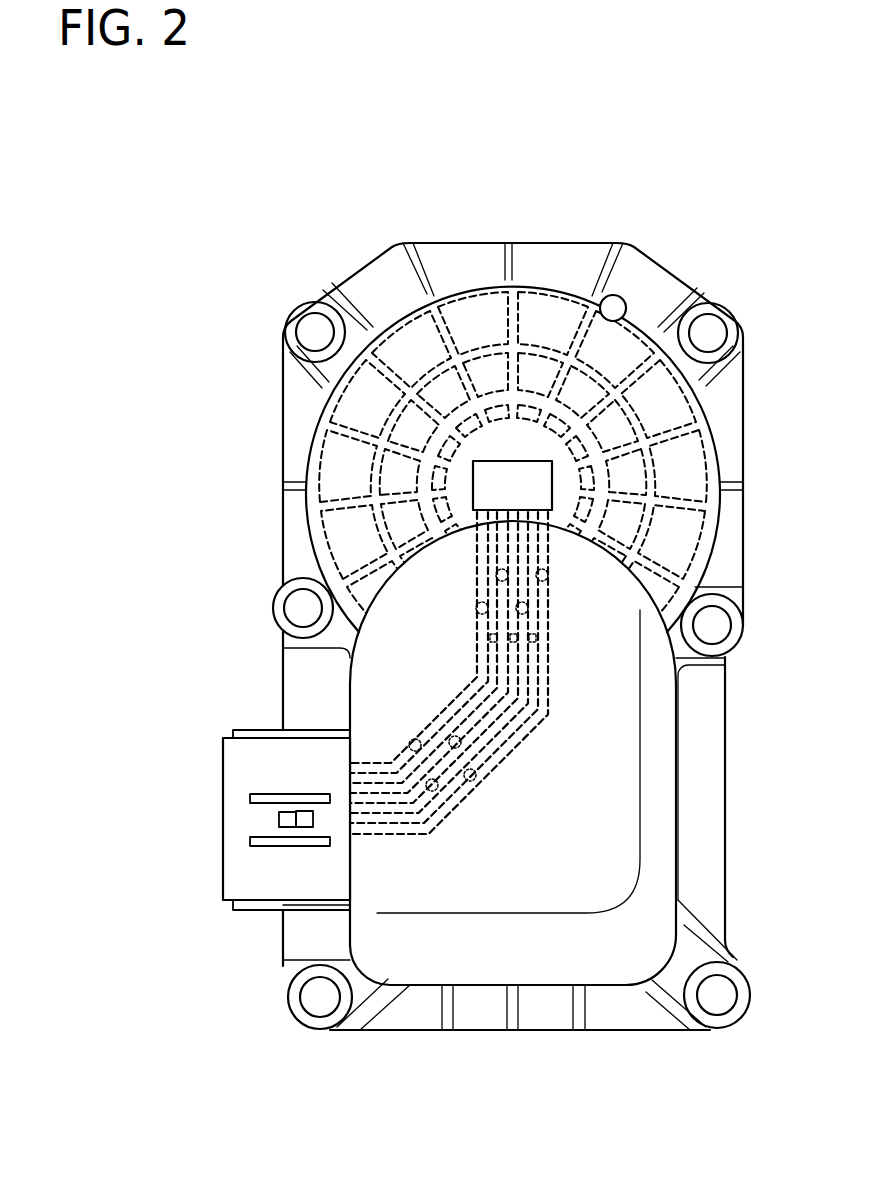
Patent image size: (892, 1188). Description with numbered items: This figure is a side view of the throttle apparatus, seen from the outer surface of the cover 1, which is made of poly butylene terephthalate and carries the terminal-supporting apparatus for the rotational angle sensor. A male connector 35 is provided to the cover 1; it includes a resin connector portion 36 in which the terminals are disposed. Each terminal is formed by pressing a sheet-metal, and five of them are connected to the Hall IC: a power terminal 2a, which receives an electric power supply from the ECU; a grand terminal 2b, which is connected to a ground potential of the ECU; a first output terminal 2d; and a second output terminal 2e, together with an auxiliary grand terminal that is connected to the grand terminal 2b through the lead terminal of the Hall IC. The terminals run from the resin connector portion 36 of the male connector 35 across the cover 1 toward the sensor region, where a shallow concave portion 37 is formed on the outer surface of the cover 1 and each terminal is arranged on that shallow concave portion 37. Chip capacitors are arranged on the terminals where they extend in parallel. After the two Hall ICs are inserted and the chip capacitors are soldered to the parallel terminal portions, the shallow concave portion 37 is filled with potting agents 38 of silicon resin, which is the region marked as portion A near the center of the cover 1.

The cover 1 is at (692, 252).
The power terminal 2a is at (473, 678).
The grand terminal 2b is at (549, 657).
The first output terminal 2d is at (527, 720).
The second output terminal 2e is at (463, 717).
The male connector 35 is at (213, 866).
The resin connector portion 36 is at (222, 772).
The shallow concave portion 37 is at (476, 464).
The potting agents 38 is at (540, 478).